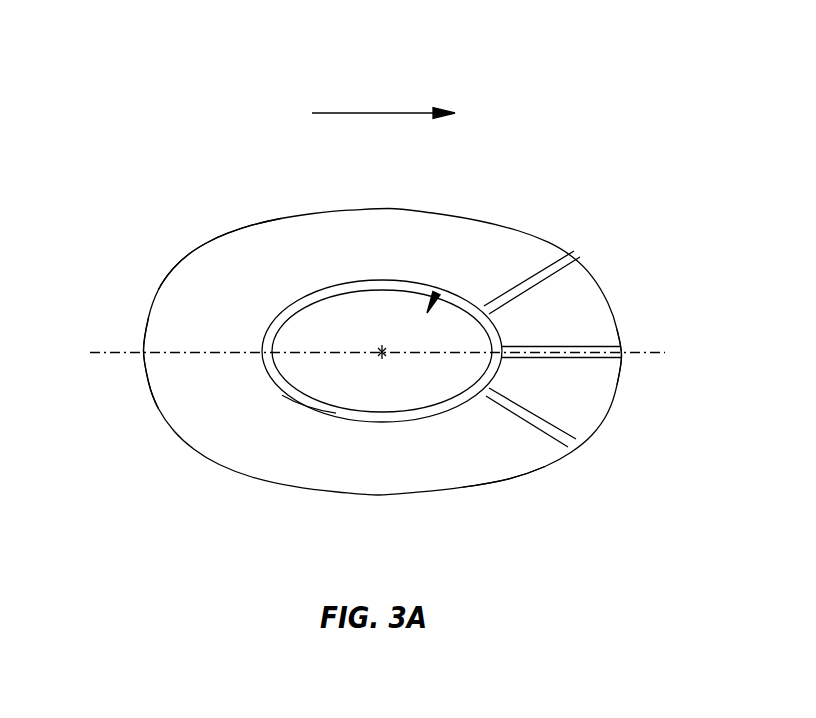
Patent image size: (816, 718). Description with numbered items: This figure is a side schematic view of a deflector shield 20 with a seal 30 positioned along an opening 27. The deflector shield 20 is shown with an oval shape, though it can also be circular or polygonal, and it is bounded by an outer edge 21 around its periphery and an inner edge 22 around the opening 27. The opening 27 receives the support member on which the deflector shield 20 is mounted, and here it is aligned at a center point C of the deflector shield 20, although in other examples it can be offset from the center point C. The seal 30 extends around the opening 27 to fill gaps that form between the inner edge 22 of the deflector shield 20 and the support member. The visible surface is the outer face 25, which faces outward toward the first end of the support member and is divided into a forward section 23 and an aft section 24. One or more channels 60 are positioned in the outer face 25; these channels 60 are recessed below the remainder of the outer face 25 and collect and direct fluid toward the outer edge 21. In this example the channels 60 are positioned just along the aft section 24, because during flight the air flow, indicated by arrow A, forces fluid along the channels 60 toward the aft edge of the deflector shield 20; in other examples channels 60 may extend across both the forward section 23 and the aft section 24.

The deflector shield 20 is at (508, 243).
The outer edge 21 is at (224, 238).
The inner edge 22 is at (302, 410).
The forward section 23 is at (143, 353).
The aft section 24 is at (613, 398).
The outer face 25 is at (497, 457).
The opening 27 is at (436, 293).
The seal 30 is at (317, 293).
The channels 60 is at (569, 256).
The center point C is at (382, 353).
The air flow A is at (363, 113).